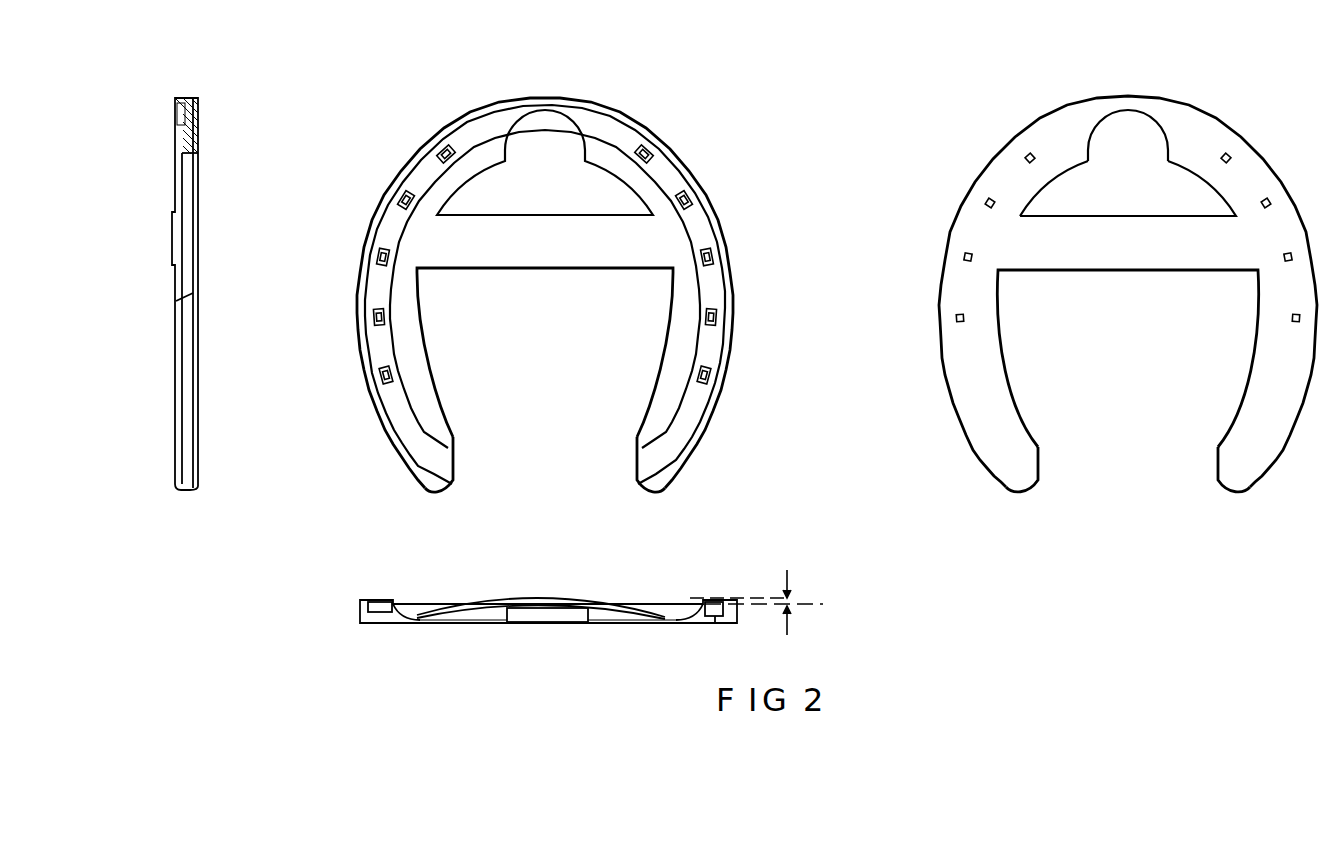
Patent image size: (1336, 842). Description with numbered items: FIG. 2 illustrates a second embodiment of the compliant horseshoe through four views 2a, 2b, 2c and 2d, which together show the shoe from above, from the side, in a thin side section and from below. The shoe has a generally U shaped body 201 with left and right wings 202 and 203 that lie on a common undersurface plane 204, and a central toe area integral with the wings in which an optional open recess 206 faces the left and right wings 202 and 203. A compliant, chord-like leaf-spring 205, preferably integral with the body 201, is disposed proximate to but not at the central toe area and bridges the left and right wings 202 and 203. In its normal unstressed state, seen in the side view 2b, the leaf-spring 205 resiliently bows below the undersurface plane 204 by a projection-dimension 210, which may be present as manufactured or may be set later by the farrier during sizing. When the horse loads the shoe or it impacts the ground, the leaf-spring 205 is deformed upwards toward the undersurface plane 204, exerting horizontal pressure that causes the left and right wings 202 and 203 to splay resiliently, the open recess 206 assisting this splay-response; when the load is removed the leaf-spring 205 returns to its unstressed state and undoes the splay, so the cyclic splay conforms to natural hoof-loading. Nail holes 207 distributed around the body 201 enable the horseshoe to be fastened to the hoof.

The generally U shaped body 201 is at (966, 198).
The left wing 202 is at (1003, 458).
The right wing 203 is at (1247, 473).
The undersurface plane 204 is at (823, 604).
The compliant leaf-spring 205 is at (1137, 253).
The open recess 206 is at (1133, 125).
The nail holes 207 is at (967, 260).
The projection-dimension 210 is at (786, 597).
The view of the second embodiment 2a is at (640, 290).
The view of the second embodiment 2b is at (622, 630).
The view of the second embodiment 2c is at (205, 287).
The view of the second embodiment 2d is at (1213, 367).